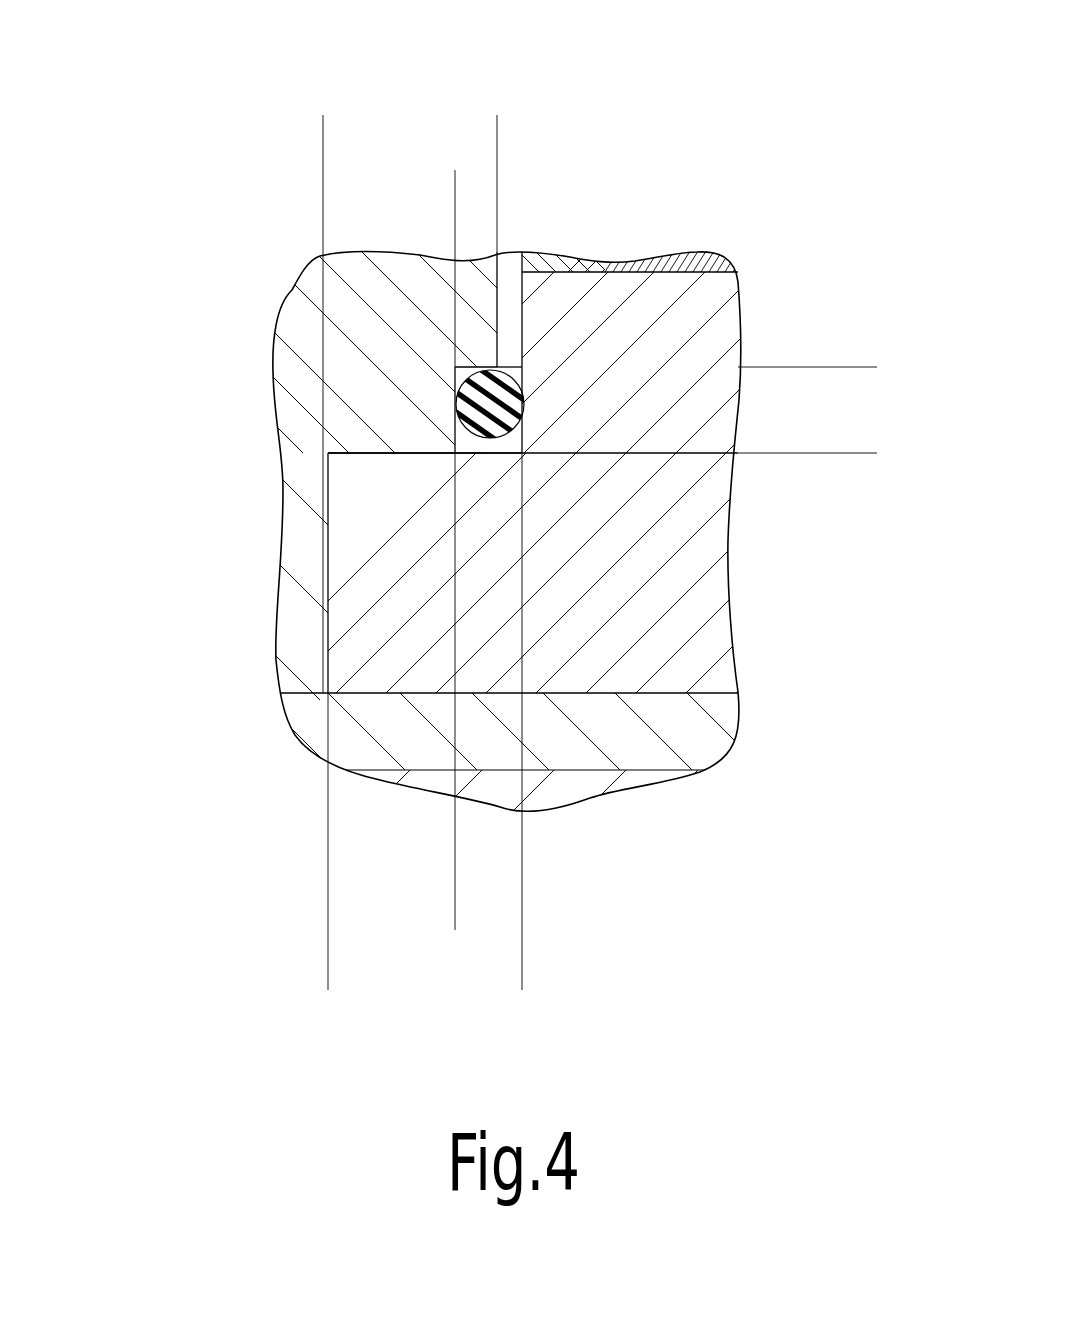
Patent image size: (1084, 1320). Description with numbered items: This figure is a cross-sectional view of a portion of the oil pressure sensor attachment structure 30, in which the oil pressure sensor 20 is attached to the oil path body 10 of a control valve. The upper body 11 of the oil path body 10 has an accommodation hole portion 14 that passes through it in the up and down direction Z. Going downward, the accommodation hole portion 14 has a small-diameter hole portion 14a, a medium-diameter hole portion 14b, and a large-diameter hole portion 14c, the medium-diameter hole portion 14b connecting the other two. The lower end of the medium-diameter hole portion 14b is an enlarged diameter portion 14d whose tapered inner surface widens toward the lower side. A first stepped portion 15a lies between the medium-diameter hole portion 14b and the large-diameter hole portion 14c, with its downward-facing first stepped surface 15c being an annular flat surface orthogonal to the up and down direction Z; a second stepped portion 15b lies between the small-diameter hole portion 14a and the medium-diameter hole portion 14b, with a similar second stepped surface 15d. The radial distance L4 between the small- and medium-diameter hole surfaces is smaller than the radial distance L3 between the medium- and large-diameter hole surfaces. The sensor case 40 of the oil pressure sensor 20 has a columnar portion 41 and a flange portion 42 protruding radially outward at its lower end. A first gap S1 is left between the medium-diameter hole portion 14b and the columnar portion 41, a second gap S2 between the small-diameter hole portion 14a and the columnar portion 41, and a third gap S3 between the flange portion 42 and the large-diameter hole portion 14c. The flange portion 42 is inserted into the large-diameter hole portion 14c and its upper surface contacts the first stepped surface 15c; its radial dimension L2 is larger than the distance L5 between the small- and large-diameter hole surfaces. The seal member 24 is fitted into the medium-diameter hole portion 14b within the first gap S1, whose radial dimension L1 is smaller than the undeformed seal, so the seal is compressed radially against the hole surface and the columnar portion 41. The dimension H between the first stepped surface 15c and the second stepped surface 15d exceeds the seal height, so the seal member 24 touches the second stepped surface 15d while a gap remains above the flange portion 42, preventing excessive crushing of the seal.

The oil path body 10 is at (278, 492).
The upper body 11 is at (303, 530).
The accommodation hole portion 14 is at (158, 306).
The small-diameter hole portion 14a is at (505, 355).
The medium-diameter hole portion 14b is at (454, 385).
The large-diameter hole portion 14c is at (328, 520).
The enlarged diameter portion 14d is at (446, 442).
The first stepped portion 15a is at (427, 461).
The second stepped portion 15b is at (588, 266).
The first stepped surface 15c is at (388, 456).
The second stepped surface 15d is at (523, 412).
The oil pressure sensor 20 is at (747, 274).
The seal member 24 is at (479, 445).
The oil pressure sensor attachment structure 30 is at (634, 133).
The sensor case 40 is at (605, 502).
The columnar portion 41 is at (671, 327).
The flange portion 42 is at (368, 634).
The first gap S1 is at (524, 447).
The second gap S2 is at (508, 262).
The third gap S3 is at (322, 612).
The dimension between first and second stepped surfaces H is at (865, 367).
The radial dimension of first gap L1 is at (521, 922).
The radial dimension of flange portion L2 is at (521, 980).
The distance between medium-diameter and large-diameter hole surfaces L3 is at (455, 181).
The distance between small-diameter and medium-diameter hole surfaces L4 is at (497, 181).
The distance between small-diameter and large-diameter hole surfaces L5 is at (497, 125).
The up and down direction Z is at (153, 1025).